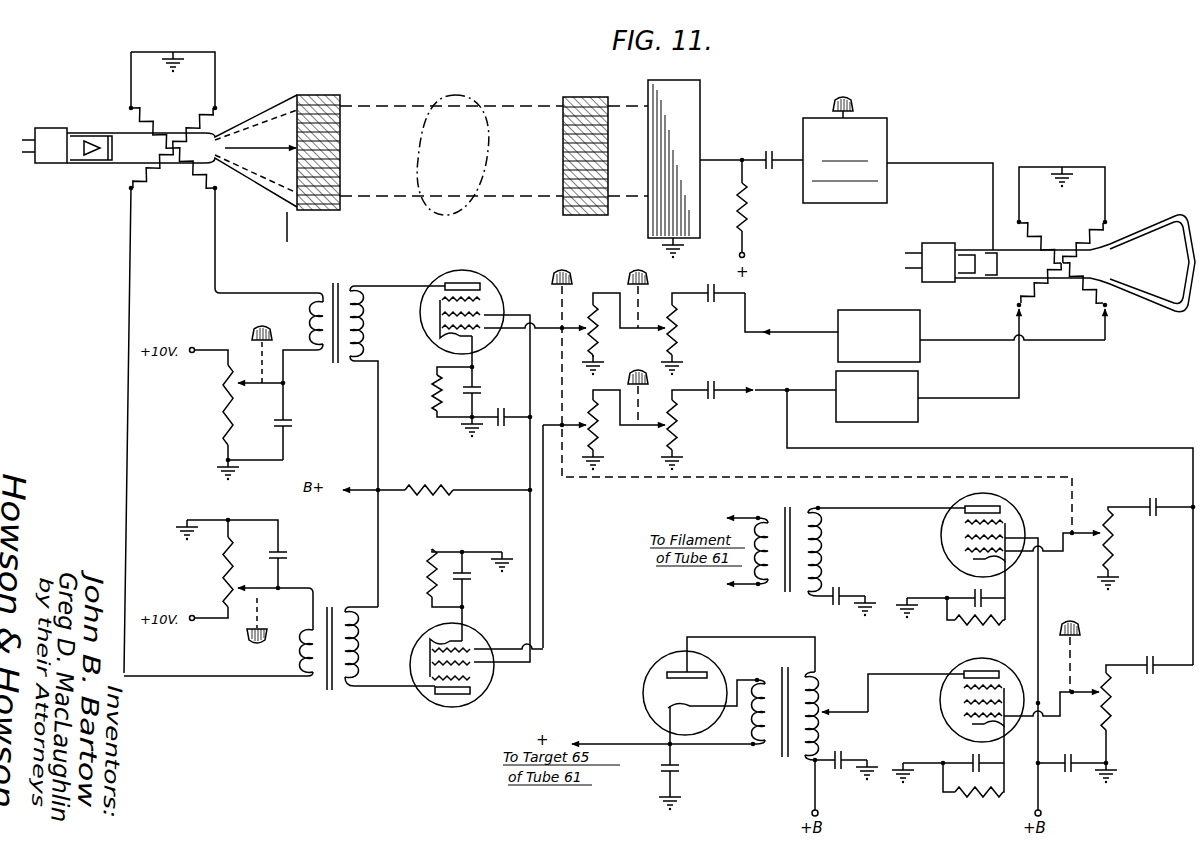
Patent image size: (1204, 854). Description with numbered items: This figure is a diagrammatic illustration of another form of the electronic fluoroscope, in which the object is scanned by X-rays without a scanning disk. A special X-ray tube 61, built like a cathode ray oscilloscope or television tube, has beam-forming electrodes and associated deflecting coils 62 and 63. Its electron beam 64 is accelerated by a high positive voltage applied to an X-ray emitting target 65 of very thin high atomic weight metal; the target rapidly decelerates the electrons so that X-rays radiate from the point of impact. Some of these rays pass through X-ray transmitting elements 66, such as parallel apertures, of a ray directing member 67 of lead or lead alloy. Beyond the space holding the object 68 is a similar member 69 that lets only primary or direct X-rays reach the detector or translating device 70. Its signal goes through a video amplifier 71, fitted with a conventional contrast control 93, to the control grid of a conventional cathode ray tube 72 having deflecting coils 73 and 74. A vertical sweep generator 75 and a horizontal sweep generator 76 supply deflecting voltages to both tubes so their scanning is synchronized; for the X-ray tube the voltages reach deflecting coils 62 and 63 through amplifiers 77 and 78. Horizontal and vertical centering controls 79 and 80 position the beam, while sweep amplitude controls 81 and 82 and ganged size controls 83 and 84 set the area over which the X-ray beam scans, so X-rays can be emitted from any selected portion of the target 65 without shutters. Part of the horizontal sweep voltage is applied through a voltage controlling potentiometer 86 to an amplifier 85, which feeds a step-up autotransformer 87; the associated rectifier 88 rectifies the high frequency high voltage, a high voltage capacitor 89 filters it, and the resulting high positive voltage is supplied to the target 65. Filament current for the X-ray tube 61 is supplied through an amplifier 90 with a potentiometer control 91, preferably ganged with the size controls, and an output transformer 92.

The X-ray tube 61 is at (118, 136).
The deflecting coil 62 is at (205, 112).
The deflecting coil 63 is at (205, 180).
The electron beam 64 is at (246, 152).
The X-ray emitting target 65 is at (299, 173).
The X-ray transmitting elements 66 is at (334, 147).
The ray directing member 67 is at (321, 93).
The object 68 is at (455, 93).
The member 69 is at (576, 97).
The detector or translating device 70 is at (701, 96).
The video amplifier 71 is at (888, 129).
The cathode ray tube 72 is at (1168, 276).
The deflecting coil 73 is at (1034, 237).
The deflecting coil 74 is at (1040, 306).
The vertical sweep generator 75 is at (869, 310).
The horizontal sweep generator 76 is at (901, 423).
The amplifier 77 is at (440, 700).
The amplifier 78 is at (470, 272).
The centering control 79 is at (210, 589).
The centering control 80 is at (217, 422).
The sweep amplitude control 81 is at (662, 418).
The sweep amplitude control 82 is at (662, 321).
The ganged size control 83 is at (586, 418).
The ganged size control 84 is at (586, 321).
The amplifier 85 is at (965, 660).
The voltage controlling potentiometer 86 is at (1097, 687).
The step-up autotransformer 87 is at (817, 700).
The rectifier 88 is at (660, 669).
The high voltage capacitor 89 is at (688, 774).
The amplifier 90 is at (950, 543).
The potentiometer control 91 is at (1098, 526).
The output transformer 92 is at (803, 503).
The contrast control 93 is at (858, 102).